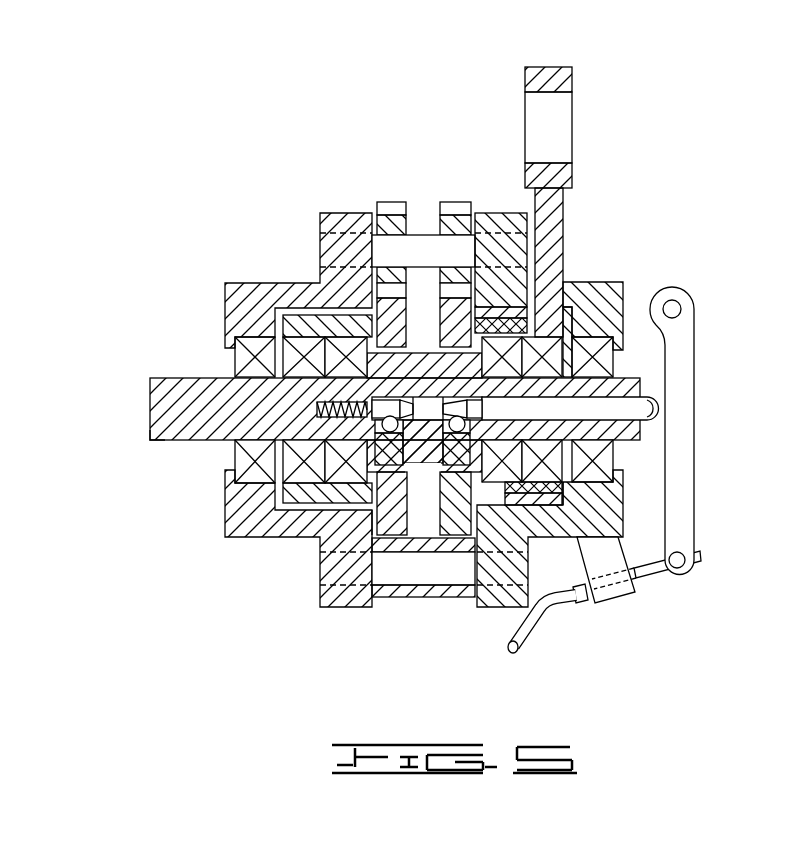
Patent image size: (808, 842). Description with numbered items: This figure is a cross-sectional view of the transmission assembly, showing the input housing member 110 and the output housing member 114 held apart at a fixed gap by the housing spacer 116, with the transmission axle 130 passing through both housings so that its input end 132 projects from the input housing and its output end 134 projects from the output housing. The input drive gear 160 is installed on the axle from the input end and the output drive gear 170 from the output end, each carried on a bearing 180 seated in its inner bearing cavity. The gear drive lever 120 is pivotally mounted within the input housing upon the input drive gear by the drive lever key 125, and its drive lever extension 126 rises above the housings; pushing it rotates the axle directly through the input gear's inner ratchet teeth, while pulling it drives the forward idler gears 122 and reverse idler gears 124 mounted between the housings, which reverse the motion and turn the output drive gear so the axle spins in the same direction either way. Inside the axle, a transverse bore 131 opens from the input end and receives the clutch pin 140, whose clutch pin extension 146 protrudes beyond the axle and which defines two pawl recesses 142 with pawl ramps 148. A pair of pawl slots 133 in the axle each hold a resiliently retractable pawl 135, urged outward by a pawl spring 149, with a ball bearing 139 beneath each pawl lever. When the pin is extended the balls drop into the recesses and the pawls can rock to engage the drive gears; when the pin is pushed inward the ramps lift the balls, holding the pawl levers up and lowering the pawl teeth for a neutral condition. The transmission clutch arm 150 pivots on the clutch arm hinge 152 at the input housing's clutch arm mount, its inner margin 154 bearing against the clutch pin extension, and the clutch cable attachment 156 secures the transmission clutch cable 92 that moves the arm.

The transmission clutch cable 92 is at (522, 650).
The input housing member 110 is at (623, 510).
The output housing member 114 is at (237, 282).
The housing spacer 116 is at (457, 597).
The gear drive lever 120 is at (565, 205).
The forward idler gears 122 is at (445, 207).
The reverse idler gears 124 is at (387, 207).
The drive lever key 125 is at (476, 306).
The drive lever extension 126 is at (560, 66).
The transmission axle 130 is at (150, 400).
The transverse bore 131 is at (633, 377).
The input end 132 is at (640, 503).
The pawl slots 133 is at (380, 497).
The output end 134 is at (150, 441).
The resiliently retractable pawl 135 is at (443, 463).
The ball bearing 139 is at (365, 470).
The clutch pin 140 is at (645, 442).
The pawl recesses 142 is at (367, 378).
The clutch pin extension 146 is at (622, 417).
The pawl ramps 148 is at (407, 400).
The pawl spring 149 is at (236, 508).
The transmission clutch arm 150 is at (688, 340).
The clutch arm hinge 152 is at (695, 300).
The inner margin 154 is at (660, 408).
The clutch cable attachment 156 is at (700, 560).
The input drive gear 160 is at (533, 233).
The output drive gear 170 is at (303, 313).
The bearing 180 is at (633, 292).